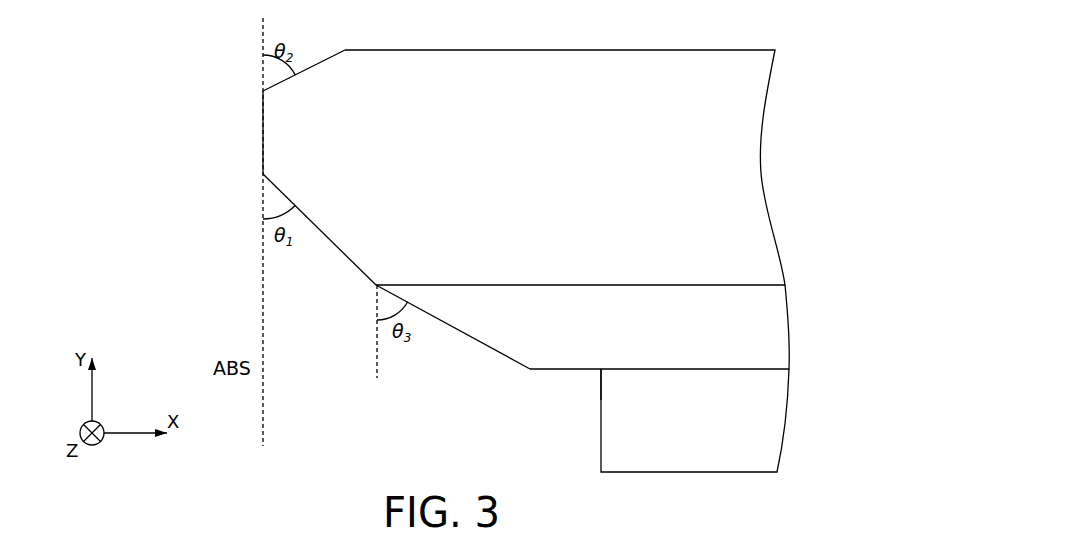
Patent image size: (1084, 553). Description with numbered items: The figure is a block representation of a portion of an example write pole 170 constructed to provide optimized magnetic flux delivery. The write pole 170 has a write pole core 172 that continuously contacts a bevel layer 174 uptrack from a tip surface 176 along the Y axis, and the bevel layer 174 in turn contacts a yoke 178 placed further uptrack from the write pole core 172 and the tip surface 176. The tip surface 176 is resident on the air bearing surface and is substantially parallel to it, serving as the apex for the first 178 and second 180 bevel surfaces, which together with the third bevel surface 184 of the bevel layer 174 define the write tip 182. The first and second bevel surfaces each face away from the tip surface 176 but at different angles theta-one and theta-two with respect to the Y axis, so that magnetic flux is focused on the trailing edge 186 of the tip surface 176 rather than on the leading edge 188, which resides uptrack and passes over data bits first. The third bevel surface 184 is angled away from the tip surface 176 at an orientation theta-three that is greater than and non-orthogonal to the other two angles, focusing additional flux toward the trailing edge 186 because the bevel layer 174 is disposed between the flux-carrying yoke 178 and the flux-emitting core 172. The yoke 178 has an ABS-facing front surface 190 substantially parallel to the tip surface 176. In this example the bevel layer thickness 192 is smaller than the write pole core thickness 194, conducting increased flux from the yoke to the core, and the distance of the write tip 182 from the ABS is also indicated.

The write pole 170 is at (146, 33).
The write pole core 172 is at (752, 179).
The bevel layer 174 is at (773, 340).
The tip surface 176 is at (265, 133).
The first bevel surface / yoke 178 is at (345, 262).
The second bevel surface 180 is at (309, 68).
The write tip 182 is at (160, 176).
The third bevel surface 184 is at (482, 344).
The trailing edge 186 is at (259, 91).
The leading edge 188 is at (259, 175).
The front surface 190 is at (600, 405).
The bevel layer thickness 192 is at (625, 285).
The write pole core thickness 194 is at (583, 50).